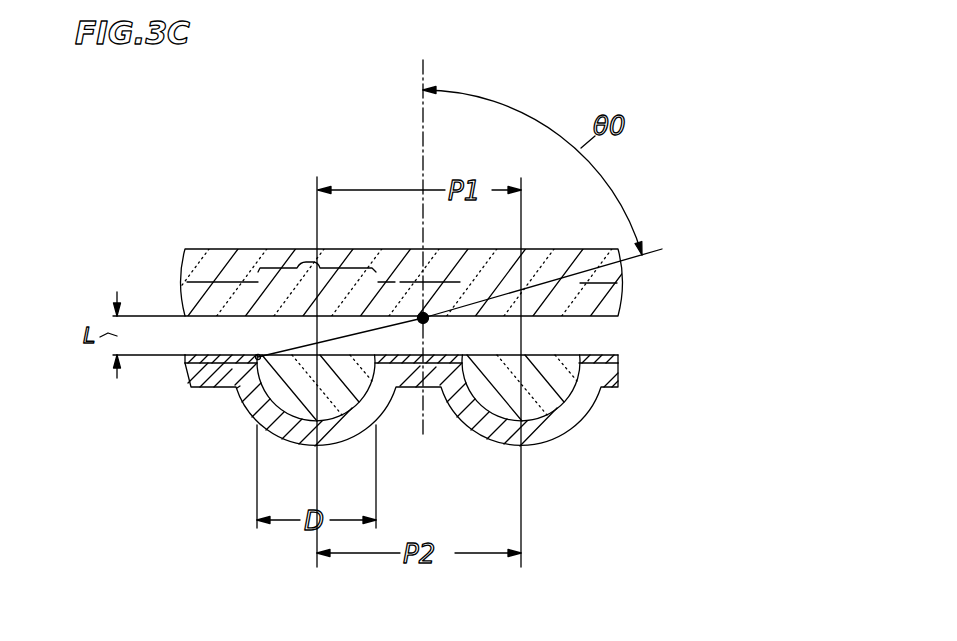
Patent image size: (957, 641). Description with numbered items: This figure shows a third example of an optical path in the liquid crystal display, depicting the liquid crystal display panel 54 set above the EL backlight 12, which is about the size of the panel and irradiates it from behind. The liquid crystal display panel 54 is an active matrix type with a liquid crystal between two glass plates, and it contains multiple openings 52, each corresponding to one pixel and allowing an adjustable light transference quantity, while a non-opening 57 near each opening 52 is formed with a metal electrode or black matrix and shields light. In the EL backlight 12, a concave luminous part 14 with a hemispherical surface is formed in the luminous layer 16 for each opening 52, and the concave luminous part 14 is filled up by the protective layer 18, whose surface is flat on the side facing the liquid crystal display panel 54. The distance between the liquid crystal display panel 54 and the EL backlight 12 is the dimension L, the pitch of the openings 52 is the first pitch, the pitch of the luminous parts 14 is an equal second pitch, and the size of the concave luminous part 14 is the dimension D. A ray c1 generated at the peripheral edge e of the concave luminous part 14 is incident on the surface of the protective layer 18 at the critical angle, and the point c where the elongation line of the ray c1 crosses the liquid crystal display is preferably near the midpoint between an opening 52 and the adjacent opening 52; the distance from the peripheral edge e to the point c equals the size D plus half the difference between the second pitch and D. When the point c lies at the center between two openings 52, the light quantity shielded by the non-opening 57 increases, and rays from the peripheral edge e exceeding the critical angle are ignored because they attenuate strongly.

The EL backlight 12 is at (468, 431).
The concave luminous part 14 is at (418, 431).
The luminous layer 16 is at (356, 411).
The protective layer 18 is at (356, 382).
The opening 52 is at (311, 217).
The liquid crystal display panel 54 is at (723, 313).
The non-opening 57 is at (222, 222).
The peripheral edge e is at (212, 422).
The point c is at (441, 335).
The ray c1 is at (258, 356).